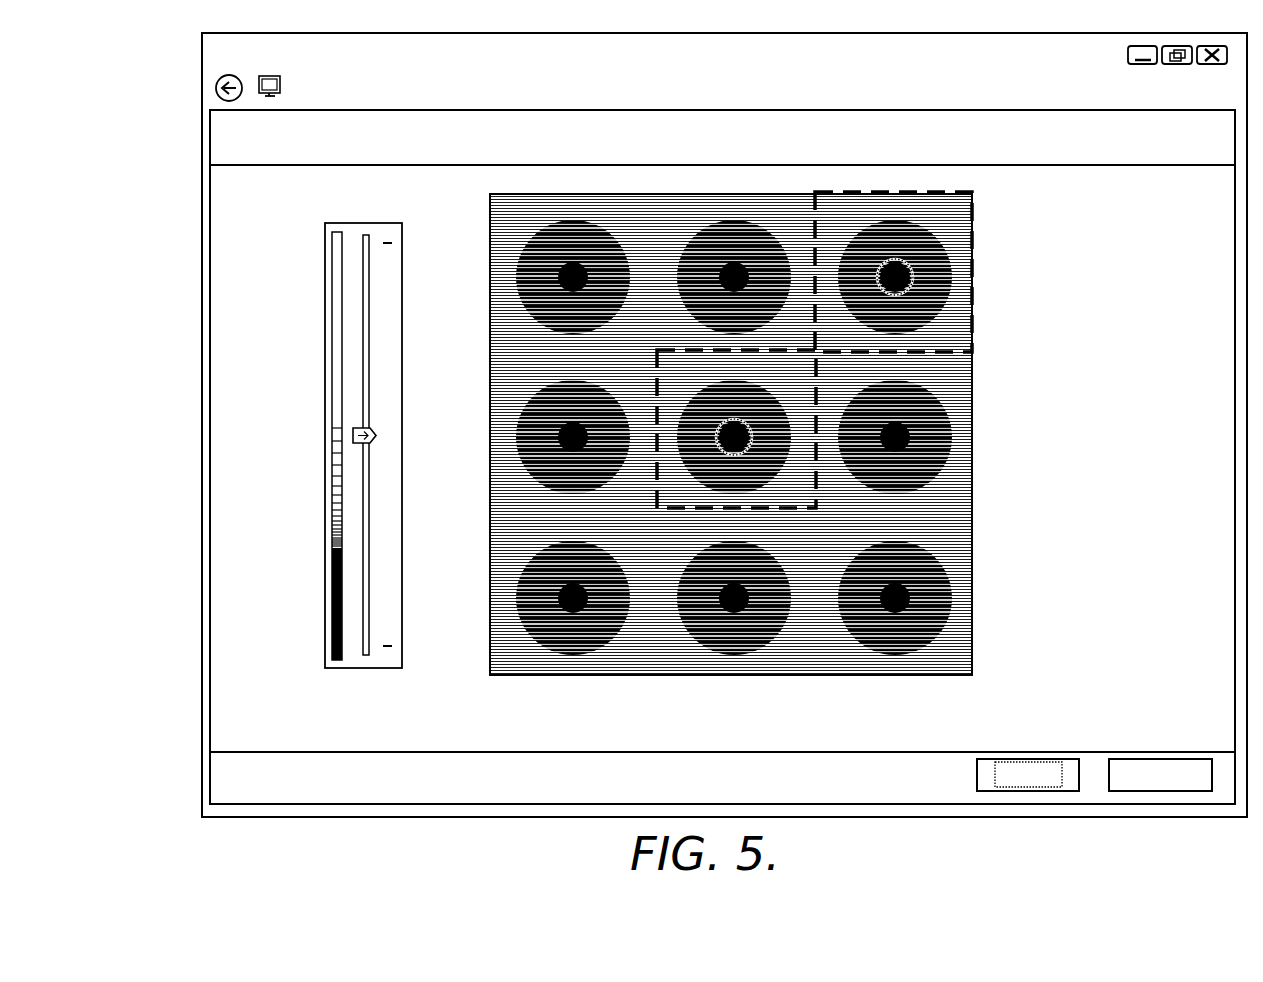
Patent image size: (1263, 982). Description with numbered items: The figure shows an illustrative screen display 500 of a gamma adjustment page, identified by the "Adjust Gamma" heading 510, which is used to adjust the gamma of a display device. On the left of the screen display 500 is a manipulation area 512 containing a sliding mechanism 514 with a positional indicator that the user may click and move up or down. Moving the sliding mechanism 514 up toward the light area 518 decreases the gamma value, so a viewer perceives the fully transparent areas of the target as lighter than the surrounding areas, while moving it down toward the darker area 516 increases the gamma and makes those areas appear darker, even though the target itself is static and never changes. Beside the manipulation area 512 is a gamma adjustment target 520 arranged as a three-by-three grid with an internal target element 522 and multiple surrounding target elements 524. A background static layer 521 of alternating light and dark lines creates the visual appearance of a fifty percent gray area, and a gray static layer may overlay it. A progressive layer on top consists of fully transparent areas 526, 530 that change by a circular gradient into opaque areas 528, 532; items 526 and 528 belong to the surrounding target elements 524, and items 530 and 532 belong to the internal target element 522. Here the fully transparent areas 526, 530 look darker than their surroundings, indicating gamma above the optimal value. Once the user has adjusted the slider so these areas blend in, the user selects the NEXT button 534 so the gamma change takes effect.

The screen display 500 is at (160, 99).
The Adjust Gamma heading 510 is at (218, 148).
The manipulation area 512 is at (326, 372).
The sliding mechanism 514 is at (376, 436).
The darker area 516 is at (336, 650).
The light area 518 is at (336, 248).
The gamma adjustment target 520 is at (734, 421).
The background static layer 521 is at (498, 247).
The internal target element 522 is at (745, 510).
The surrounding target elements 524 is at (973, 233).
The fully transparent area 526 is at (883, 291).
The opaque area 528 is at (928, 297).
The internal fully transparent area 530 is at (720, 425).
The opaque area 532 is at (713, 462).
The NEXT button 534 is at (977, 775).